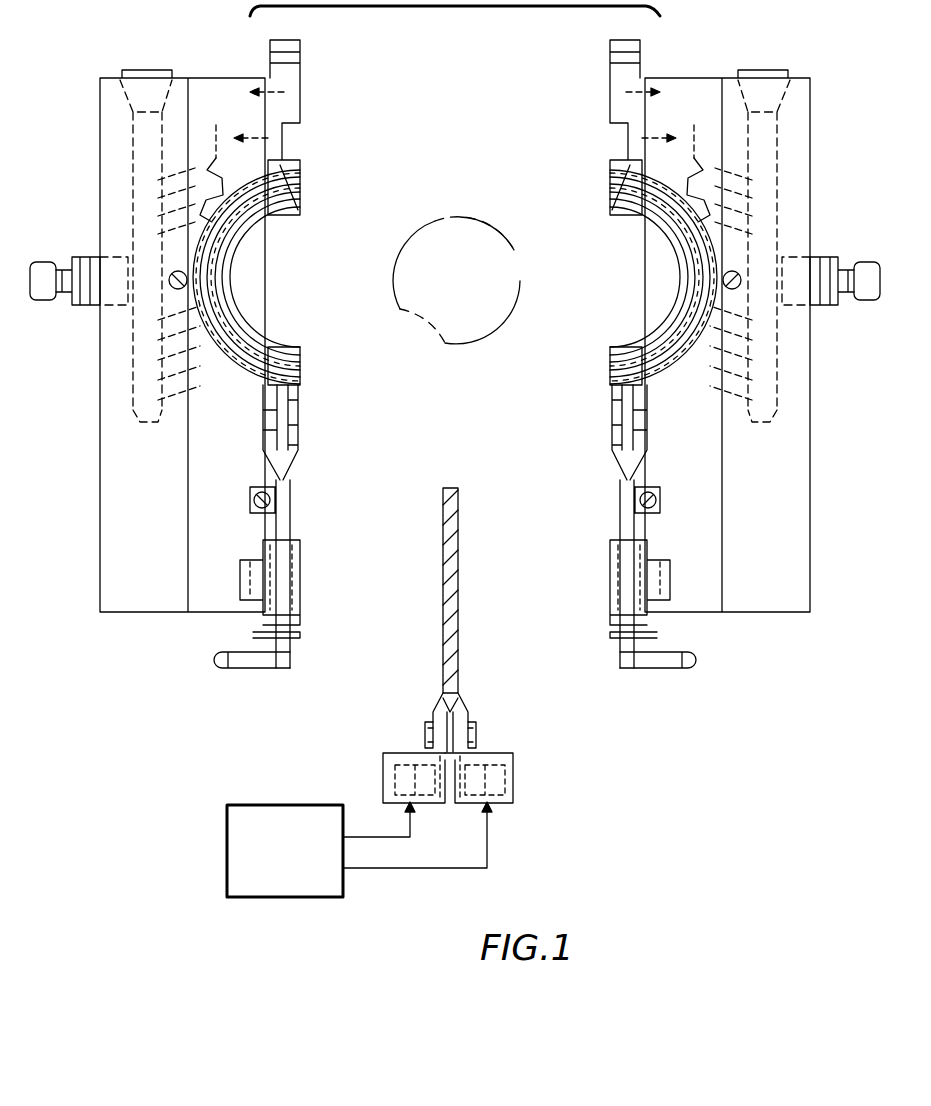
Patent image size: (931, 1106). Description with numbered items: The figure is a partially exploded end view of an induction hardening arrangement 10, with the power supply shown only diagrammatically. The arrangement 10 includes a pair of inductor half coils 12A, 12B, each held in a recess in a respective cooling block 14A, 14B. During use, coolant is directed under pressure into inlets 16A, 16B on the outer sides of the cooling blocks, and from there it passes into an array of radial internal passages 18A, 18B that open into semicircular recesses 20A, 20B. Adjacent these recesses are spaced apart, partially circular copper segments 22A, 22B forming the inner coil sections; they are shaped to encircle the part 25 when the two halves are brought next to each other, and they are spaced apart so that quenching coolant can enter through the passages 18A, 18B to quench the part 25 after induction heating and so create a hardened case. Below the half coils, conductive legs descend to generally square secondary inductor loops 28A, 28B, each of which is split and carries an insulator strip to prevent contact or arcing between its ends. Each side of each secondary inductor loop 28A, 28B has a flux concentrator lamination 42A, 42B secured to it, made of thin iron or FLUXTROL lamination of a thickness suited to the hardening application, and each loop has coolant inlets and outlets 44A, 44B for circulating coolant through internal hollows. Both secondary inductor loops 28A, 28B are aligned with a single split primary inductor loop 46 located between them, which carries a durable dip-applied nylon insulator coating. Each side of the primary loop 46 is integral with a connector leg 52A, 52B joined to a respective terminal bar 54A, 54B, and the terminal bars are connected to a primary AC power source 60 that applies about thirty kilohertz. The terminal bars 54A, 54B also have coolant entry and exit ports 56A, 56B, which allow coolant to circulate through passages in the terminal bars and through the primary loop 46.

The arrangement 10 is at (455, 484).
The inductor half coil 12A is at (294, 260).
The inductor half coil 12B is at (627, 260).
The cooling block 14A is at (118, 82).
The cooling block 14B is at (693, 79).
The inlet 16A is at (63, 260).
The inlet 16B is at (821, 256).
The radial internal passage 18A is at (241, 155).
The radial internal passage 18B is at (667, 155).
The semicircular recess 20A is at (238, 248).
The semicircular recess 20B is at (628, 228).
The partially circular segment 22A is at (232, 285).
The partially circular segment 22B is at (670, 262).
The part 25 is at (497, 266).
The secondary inductor loop 28A is at (298, 519).
The secondary inductor loop 28B is at (612, 519).
The flux concentrator lamination 42A is at (305, 577).
The flux concentrator lamination 42B is at (610, 574).
The coolant inlet and outlet 44A is at (233, 670).
The coolant inlet and outlet 44B is at (666, 670).
The primary inductor loop 46 is at (443, 617).
The connector leg 52A is at (434, 719).
The connector leg 52B is at (468, 719).
The terminal bar 54A is at (392, 770).
The terminal bar 54B is at (510, 760).
The coolant entry/exit port 56A is at (383, 781).
The coolant entry/exit port 56B is at (512, 805).
The primary AC power source 60 is at (278, 901).